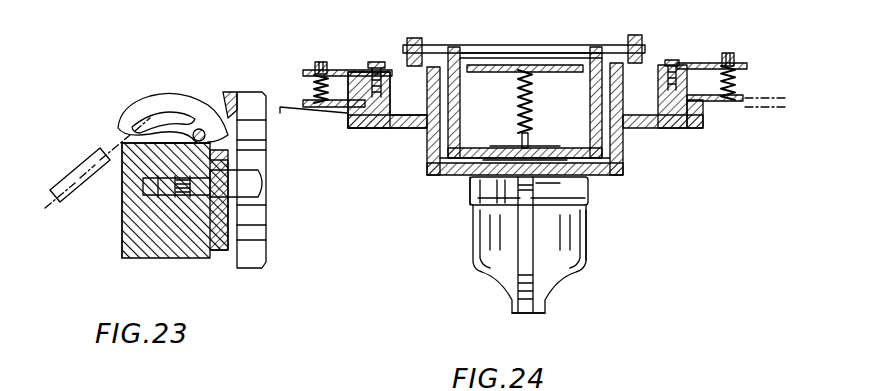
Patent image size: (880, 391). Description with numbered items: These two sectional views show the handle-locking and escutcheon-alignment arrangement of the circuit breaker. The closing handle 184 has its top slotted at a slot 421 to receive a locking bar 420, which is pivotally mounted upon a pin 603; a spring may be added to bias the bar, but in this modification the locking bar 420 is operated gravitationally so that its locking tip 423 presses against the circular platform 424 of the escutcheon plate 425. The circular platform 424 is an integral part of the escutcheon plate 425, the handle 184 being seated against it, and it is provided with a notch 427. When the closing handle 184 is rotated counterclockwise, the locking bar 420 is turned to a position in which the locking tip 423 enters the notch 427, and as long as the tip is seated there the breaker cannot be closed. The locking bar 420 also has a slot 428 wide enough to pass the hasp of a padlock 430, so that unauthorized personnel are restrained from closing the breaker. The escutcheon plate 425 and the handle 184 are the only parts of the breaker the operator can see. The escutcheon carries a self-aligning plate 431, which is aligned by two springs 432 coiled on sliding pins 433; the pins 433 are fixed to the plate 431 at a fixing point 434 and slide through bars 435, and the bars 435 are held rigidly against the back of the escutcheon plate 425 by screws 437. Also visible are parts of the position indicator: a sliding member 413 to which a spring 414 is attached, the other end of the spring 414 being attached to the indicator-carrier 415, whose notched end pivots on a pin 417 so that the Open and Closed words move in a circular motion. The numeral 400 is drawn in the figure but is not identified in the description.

In FIG. 23, the closing handle 184 is at (124, 230).
In FIG. 24, the closing handle 184 is at (590, 232).
In FIG. 24, the contact element 400 is at (548, 148).
In FIG. 24, the sliding member 413 is at (500, 64).
In FIG. 24, the spring 414 is at (532, 96).
In FIG. 24, the indicator-carrier 415 is at (478, 148).
In FIG. 24, the pin 417 is at (452, 45).
In FIG. 23, the locking bar 420 is at (195, 95).
In FIG. 24, the locking bar 420 is at (533, 258).
In FIG. 24, the slot 421 is at (540, 313).
In FIG. 23, the locking tip 423 is at (250, 95).
In FIG. 24, the locking tip 423 is at (535, 188).
In FIG. 23, the circular platform 424 is at (222, 245).
In FIG. 24, the circular platform 424 is at (470, 198).
In FIG. 24, the escutcheon plate 425 is at (625, 165).
In FIG. 23, the notch 427 is at (258, 135).
In FIG. 24, the notch 427 is at (475, 222).
In FIG. 23, the slot 428 is at (152, 112).
In FIG. 23, the padlock 430 is at (72, 188).
In FIG. 24, the self-aligning plate 431 is at (742, 99).
In FIG. 24, the springs 432 is at (327, 65).
In FIG. 24, the sliding pins 433 is at (318, 62).
In FIG. 24, the fixing point 434 is at (323, 108).
In FIG. 24, the bars 435 is at (308, 76).
In FIG. 24, the screws 437 is at (378, 62).
In FIG. 23, the pin 603 is at (201, 130).